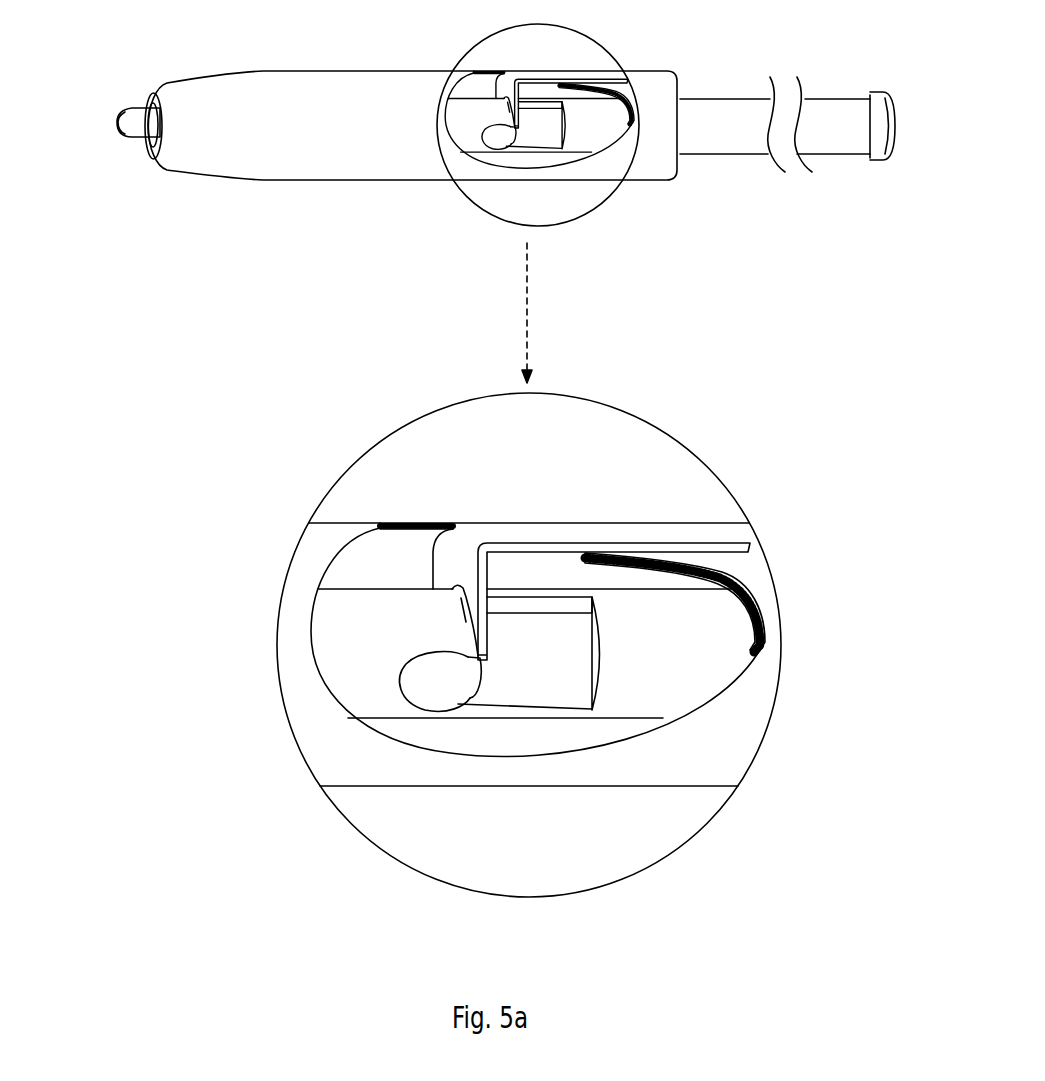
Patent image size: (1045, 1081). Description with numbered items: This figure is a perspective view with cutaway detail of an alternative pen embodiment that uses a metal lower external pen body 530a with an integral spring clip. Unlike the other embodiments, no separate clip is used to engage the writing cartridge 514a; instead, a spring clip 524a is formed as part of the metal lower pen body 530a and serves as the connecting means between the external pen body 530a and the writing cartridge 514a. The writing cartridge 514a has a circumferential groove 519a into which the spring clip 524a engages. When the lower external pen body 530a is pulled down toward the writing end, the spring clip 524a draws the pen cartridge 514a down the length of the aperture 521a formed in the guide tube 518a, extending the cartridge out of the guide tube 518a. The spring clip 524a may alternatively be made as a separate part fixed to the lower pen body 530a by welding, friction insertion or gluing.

The writing cartridge 514a is at (132, 127).
The guide tube 518a is at (722, 118).
The circumferential groove 519a is at (468, 683).
The aperture 521a is at (538, 605).
The spring clip 524a is at (457, 548).
The metal lower external pen body 530a is at (288, 125).